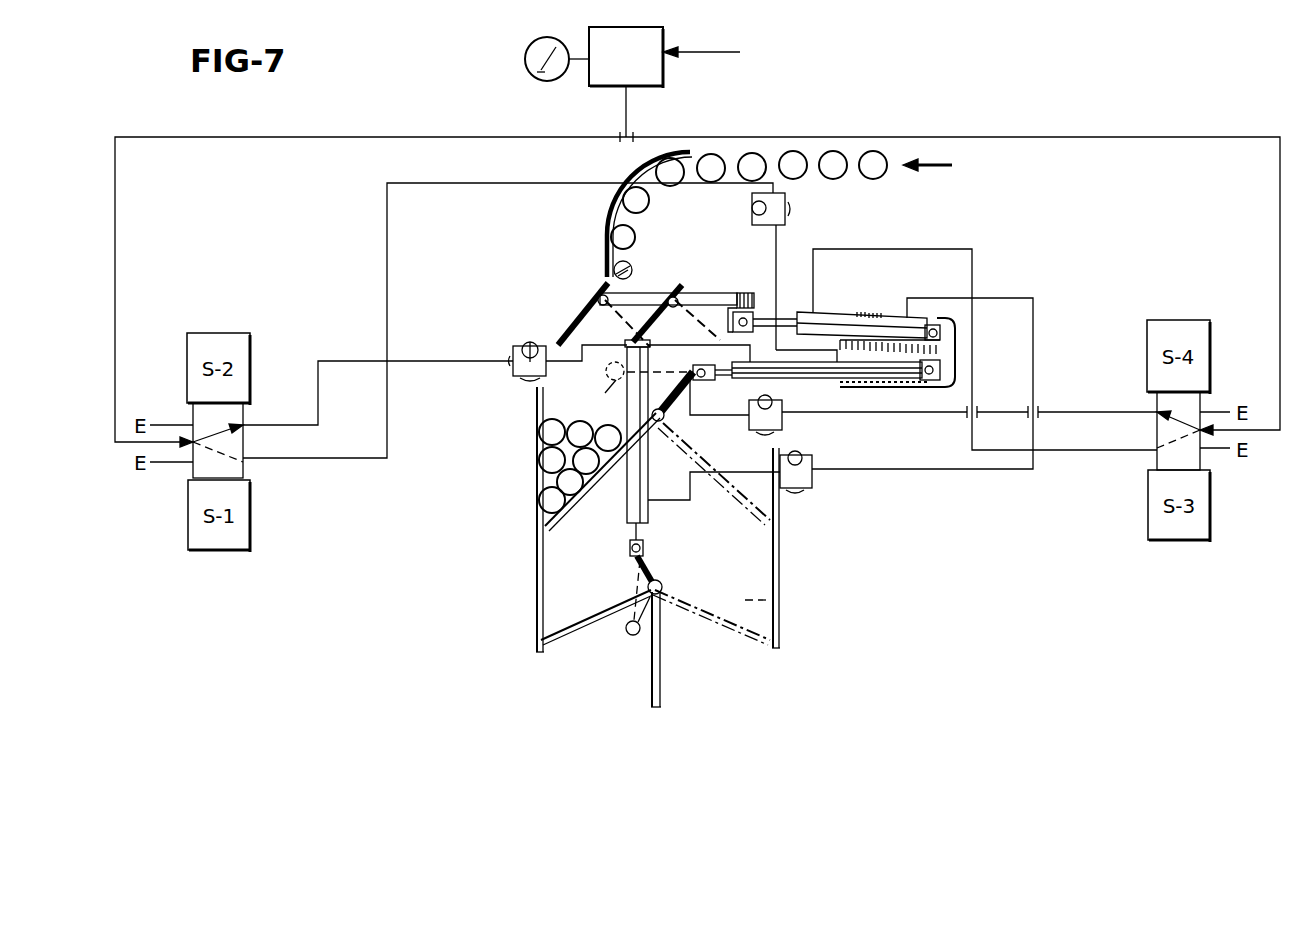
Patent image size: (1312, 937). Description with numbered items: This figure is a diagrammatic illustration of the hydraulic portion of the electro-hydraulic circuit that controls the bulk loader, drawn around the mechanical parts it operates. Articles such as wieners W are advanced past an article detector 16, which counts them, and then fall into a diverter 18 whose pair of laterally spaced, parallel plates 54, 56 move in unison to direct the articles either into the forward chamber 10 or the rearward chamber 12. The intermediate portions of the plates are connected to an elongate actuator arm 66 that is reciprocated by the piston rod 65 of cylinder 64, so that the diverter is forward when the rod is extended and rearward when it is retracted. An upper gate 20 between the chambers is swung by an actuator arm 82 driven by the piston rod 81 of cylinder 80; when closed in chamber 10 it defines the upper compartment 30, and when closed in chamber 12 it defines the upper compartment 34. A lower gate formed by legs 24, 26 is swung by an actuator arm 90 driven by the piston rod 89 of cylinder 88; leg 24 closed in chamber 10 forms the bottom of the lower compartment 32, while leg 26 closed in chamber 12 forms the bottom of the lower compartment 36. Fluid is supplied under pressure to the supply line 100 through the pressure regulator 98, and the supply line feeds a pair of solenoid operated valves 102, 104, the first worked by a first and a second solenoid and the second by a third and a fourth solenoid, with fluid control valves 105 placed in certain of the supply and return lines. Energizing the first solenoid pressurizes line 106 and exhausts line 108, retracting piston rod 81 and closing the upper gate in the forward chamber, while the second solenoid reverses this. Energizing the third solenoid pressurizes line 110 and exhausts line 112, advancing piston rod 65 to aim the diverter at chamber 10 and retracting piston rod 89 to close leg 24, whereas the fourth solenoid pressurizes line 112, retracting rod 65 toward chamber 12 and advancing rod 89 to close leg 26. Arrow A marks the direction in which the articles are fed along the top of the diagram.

The pressure regulator 98 is at (652, 38).
The supply line 100 is at (400, 138).
The solenoid operated valve 102 is at (240, 462).
The solenoid operated valve 104 is at (1165, 453).
The fluid control valve 105 is at (540, 372).
The line 106 is at (430, 361).
The line 108 is at (388, 262).
The line 110 is at (992, 299).
The line 112 is at (903, 249).
The article detector 16 is at (620, 275).
The diverter 18 is at (570, 296).
The diverter plate 54 is at (572, 328).
The diverter plate 56 is at (653, 318).
The actuator arm 66 is at (738, 296).
The piston rod 65 is at (765, 308).
The cylinder 64 is at (843, 312).
The cylinder 80 is at (805, 375).
The piston rod 81 is at (720, 355).
The actuator arm 82 is at (672, 400).
The upper compartment 30 is at (550, 418).
The upper gate 20 is at (566, 507).
The cylinder 88 is at (650, 517).
The piston rod 89 is at (631, 533).
The actuator arm 90 is at (646, 566).
The forward chamber 10 is at (547, 539).
The rearward chamber 12 is at (778, 562).
The leg 24 is at (603, 612).
The lower compartment 32 is at (562, 578).
The leg 26 is at (662, 655).
The upper compartment 34 is at (782, 499).
The lower compartment 36 is at (783, 601).
The wieners W is at (833, 180).
The feed direction arrow A is at (928, 181).